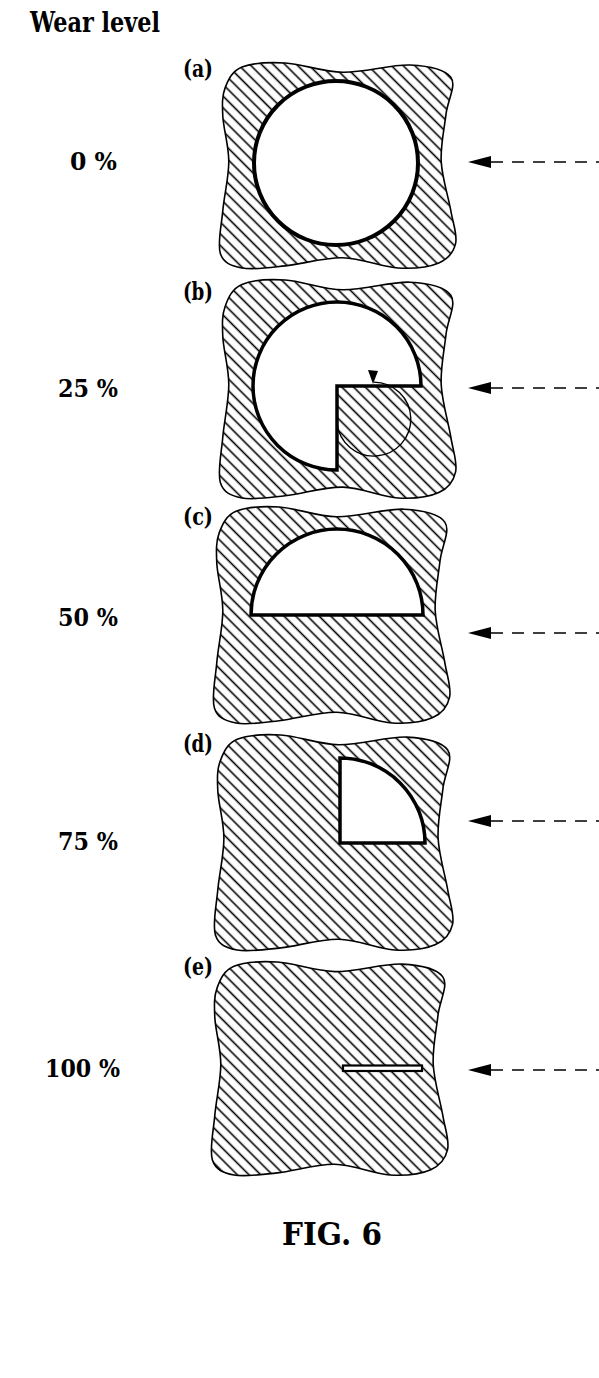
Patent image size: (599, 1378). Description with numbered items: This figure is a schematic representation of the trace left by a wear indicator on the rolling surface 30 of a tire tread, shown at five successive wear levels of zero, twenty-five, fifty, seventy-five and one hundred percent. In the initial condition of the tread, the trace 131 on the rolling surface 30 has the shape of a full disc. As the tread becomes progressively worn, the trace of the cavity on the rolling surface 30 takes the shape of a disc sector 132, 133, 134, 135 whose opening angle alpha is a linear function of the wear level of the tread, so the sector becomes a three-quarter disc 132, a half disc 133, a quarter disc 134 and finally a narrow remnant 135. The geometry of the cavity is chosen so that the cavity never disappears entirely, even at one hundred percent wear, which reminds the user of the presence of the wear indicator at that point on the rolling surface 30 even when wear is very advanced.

The rolling surface 30 is at (431, 313).
The trace 131 is at (336, 163).
The disc sector 132 is at (337, 386).
The disc sector 133 is at (337, 572).
The disc sector 134 is at (382, 800).
The disc sector 135 is at (384, 1073).